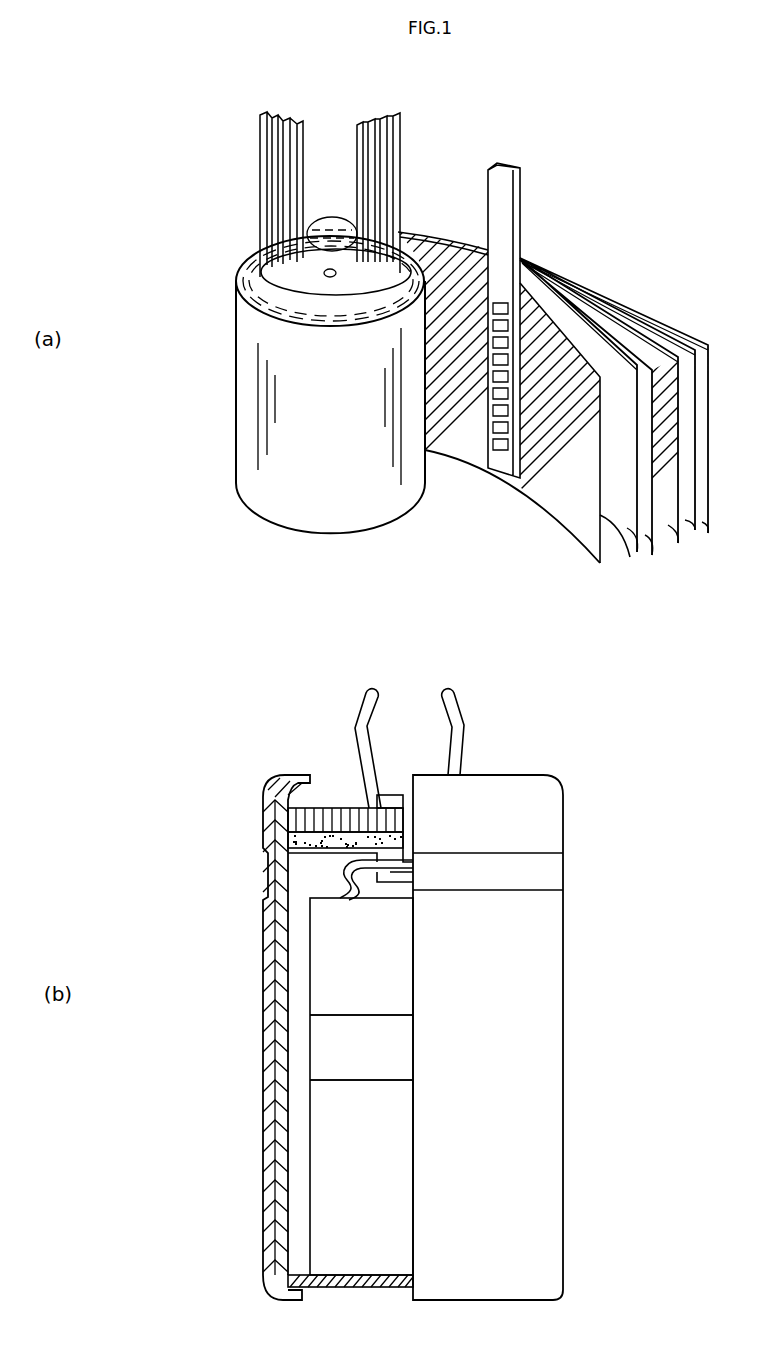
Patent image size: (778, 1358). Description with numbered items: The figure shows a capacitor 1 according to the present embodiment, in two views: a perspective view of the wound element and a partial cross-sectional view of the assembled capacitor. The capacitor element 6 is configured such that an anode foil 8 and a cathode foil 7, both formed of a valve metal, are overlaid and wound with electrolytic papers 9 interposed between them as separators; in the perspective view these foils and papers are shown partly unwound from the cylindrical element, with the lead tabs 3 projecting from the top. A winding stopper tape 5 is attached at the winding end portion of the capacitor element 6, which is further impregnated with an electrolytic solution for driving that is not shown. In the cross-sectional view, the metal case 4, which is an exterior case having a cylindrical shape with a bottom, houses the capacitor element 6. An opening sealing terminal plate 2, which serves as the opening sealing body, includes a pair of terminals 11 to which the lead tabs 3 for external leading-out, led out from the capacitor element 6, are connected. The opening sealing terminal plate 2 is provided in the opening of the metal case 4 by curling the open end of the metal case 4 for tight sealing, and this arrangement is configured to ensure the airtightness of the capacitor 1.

The capacitor 1 is at (674, 788).
The opening sealing terminal plate 2 is at (345, 818).
The lead tabs 3 is at (262, 148).
The metal case 4 is at (282, 925).
The winding stopper tape 5 is at (336, 1037).
The capacitor element 6 is at (240, 434).
The cathode foil 7 is at (647, 343).
The anode foil 8 is at (545, 340).
The electrolytic papers 9 is at (697, 532).
The terminals 11 is at (478, 712).